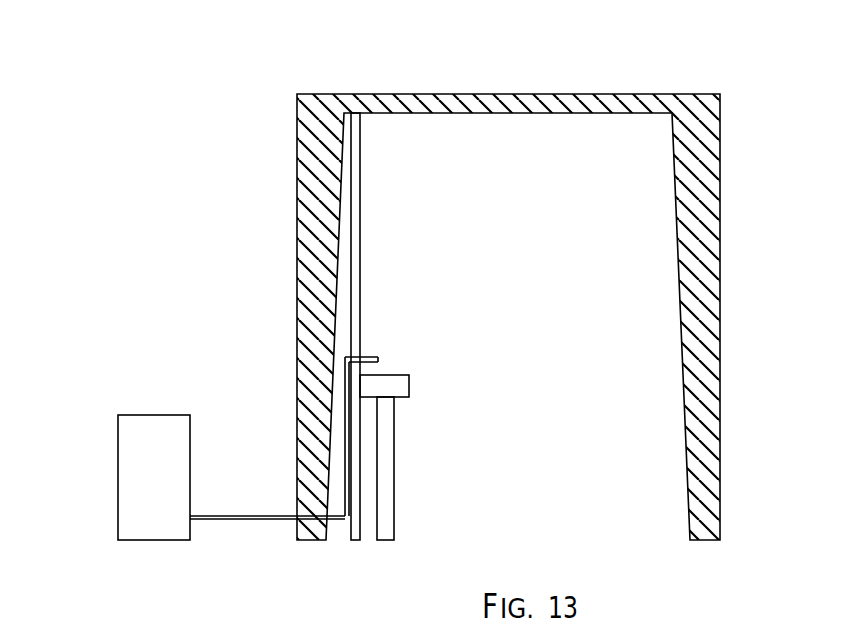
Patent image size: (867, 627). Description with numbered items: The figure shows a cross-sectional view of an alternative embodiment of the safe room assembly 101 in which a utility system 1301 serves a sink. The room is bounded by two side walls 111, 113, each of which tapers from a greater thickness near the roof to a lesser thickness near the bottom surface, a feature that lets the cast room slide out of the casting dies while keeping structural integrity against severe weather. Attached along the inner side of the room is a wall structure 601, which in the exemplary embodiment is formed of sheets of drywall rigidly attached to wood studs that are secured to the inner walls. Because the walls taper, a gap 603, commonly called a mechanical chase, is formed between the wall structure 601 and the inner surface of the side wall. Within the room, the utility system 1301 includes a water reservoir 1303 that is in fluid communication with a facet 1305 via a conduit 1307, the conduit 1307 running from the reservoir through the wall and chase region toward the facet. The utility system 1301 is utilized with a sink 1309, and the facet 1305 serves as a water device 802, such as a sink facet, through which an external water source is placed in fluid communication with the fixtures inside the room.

The safe room assembly 101 is at (103, 38).
The side wall 111 is at (738, 278).
The side wall 113 is at (244, 307).
The wall structure 601 is at (361, 238).
The gap 603 is at (331, 399).
The water device 802 is at (403, 311).
The utility system 1301 is at (458, 457).
The water reservoir 1303 is at (158, 415).
The facet 1305 is at (386, 356).
The conduit 1307 is at (283, 519).
The sink 1309 is at (409, 386).